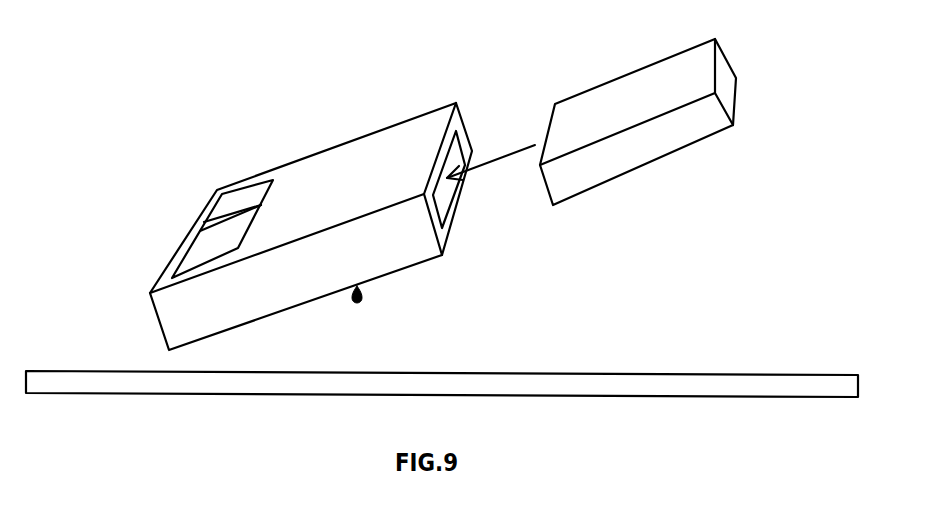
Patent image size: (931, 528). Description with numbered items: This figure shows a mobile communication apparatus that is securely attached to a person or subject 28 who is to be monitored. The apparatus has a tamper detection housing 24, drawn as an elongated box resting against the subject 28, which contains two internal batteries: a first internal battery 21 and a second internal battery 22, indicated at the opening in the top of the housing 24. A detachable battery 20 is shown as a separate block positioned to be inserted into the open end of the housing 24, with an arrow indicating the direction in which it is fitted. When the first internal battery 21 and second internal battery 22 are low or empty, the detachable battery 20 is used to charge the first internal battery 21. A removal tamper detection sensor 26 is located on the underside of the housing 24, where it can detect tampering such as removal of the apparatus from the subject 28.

The detachable battery 20 is at (645, 60).
The first internal battery 21 is at (238, 198).
The second internal battery 22 is at (200, 260).
The housing 24 is at (377, 124).
The removal tamper detection sensor 26 is at (378, 297).
The person or subject 28 is at (632, 370).